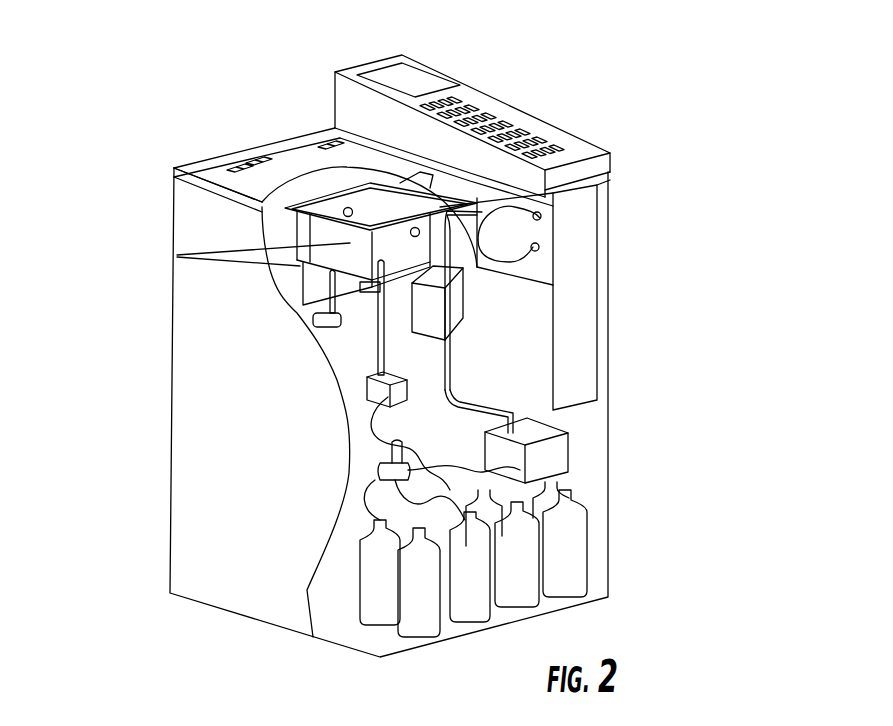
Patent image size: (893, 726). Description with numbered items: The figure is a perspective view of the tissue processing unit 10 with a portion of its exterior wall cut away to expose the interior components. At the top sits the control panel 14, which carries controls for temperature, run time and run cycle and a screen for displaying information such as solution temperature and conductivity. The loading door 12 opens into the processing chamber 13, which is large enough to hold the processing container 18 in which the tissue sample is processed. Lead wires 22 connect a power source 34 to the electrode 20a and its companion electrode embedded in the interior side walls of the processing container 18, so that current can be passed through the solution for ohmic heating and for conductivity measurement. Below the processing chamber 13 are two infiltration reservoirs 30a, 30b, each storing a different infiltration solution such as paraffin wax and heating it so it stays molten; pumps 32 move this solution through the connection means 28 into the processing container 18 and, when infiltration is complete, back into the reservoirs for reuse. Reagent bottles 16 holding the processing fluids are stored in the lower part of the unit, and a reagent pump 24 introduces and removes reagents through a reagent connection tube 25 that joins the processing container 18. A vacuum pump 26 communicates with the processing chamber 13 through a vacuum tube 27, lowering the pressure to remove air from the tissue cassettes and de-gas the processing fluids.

The tissue processing unit 10 is at (697, 158).
The loading door 12 is at (287, 170).
The processing chamber 13 is at (338, 174).
The control panel 14 is at (512, 112).
The reagent bottles 16 is at (483, 585).
The processing container 18 is at (265, 207).
The electrode 20a is at (177, 255).
The lead wires 22 is at (540, 220).
The reagent pump 24 is at (367, 386).
The reagent connection tube 25 is at (325, 282).
The vacuum pump 26 is at (563, 465).
The vacuum tube 27 is at (427, 296).
The connection means 28 is at (350, 275).
The infiltration reservoir 30a is at (383, 298).
The infiltration reservoir 30b is at (383, 335).
The pumps 32 is at (360, 312).
The power source 34 is at (587, 222).